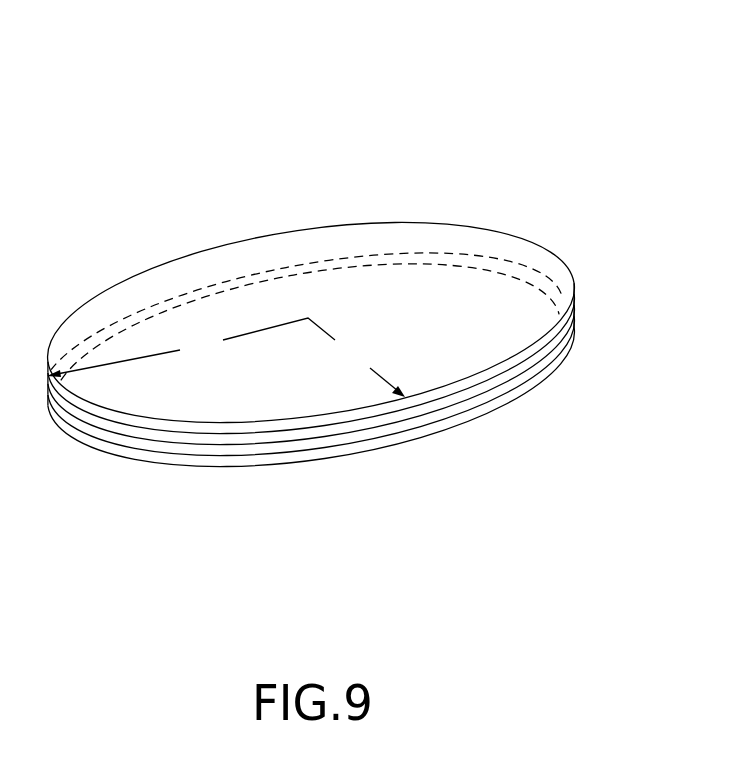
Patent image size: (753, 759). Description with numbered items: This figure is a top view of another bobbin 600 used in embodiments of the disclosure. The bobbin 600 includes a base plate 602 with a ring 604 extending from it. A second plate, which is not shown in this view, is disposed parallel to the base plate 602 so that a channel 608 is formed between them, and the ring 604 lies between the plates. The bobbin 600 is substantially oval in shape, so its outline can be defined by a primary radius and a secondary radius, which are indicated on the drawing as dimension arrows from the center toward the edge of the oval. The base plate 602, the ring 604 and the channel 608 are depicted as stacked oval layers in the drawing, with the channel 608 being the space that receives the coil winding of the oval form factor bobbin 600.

The bobbin 600 is at (366, 267).
The base plate 602 is at (482, 403).
The ring 604 is at (502, 372).
The channel 608 is at (574, 322).